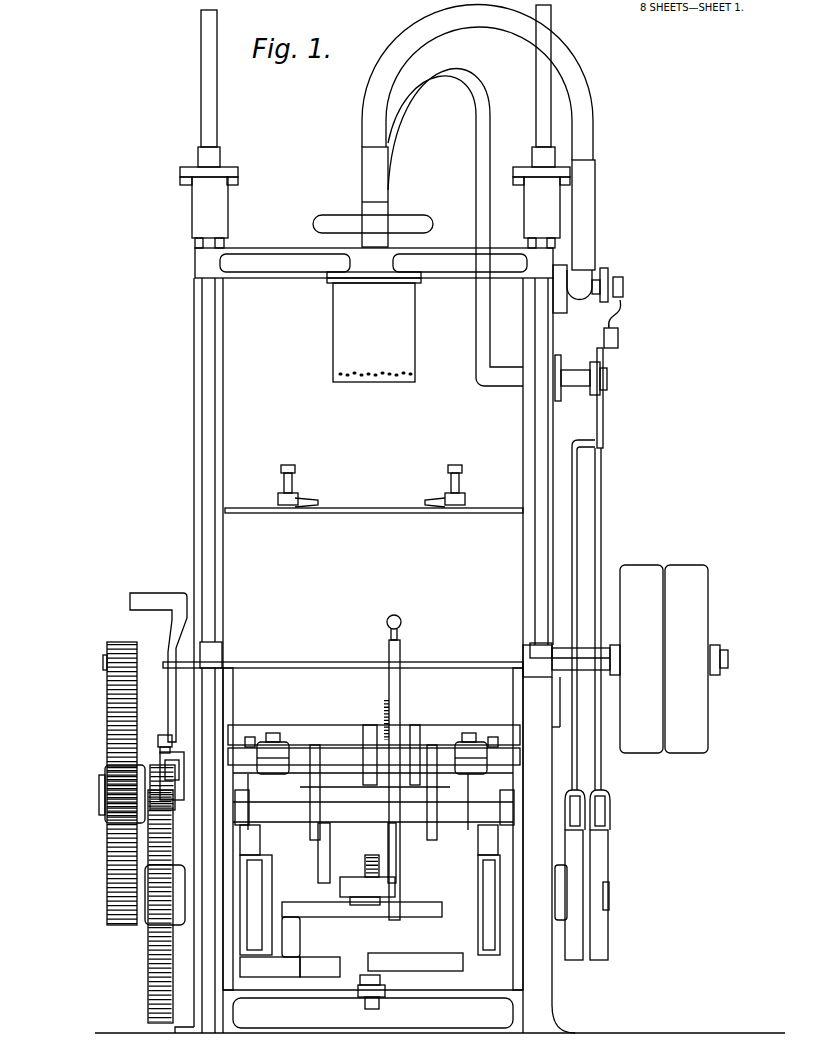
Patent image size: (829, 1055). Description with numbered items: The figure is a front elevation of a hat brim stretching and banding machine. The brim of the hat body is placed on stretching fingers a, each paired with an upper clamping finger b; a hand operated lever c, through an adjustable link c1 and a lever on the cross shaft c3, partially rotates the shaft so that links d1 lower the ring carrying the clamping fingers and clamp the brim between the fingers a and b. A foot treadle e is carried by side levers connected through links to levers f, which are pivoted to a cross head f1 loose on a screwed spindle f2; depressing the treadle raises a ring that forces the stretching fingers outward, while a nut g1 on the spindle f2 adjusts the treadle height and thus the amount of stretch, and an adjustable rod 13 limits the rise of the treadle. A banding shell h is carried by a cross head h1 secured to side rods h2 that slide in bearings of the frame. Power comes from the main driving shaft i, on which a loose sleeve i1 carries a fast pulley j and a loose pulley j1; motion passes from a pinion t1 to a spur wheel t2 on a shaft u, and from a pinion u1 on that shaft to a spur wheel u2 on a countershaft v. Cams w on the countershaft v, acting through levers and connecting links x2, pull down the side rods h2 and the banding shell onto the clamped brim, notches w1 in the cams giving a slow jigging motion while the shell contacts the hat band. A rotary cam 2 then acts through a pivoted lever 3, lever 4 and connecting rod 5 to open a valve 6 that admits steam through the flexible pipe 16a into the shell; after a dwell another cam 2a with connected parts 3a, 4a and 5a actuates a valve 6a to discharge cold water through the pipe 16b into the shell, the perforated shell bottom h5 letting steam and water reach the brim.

The pipe 16b is at (500, 26).
The flexible pipe 16a is at (475, 185).
The valve 6a is at (612, 282).
The lever 4a is at (618, 318).
The valve 6 is at (582, 383).
The lever 4 is at (604, 410).
The connecting rod 5a is at (603, 500).
The connecting rod 5 is at (573, 552).
The cross head h1 is at (452, 268).
The banding shell h is at (345, 330).
The side rods h2 is at (206, 363).
The cup bottom h5 is at (412, 374).
The upper clamping finger b is at (288, 468).
The stretching fingers a is at (306, 503).
The hand operated lever c is at (174, 628).
The adjustable link c1 is at (158, 740).
The cross shaft c3 is at (343, 765).
The pinion t1 is at (108, 655).
The spur wheel t2 is at (118, 752).
The shaft u is at (108, 795).
The pinion u1 is at (184, 798).
The spur wheel u2 is at (148, 948).
The countershaft v is at (190, 898).
The main driving shaft i is at (730, 658).
The loose sleeve i1 is at (615, 652).
The fast pulley j is at (642, 740).
The loose pulley j1 is at (692, 740).
The links d1 is at (270, 740).
The adjustable rod 13 is at (400, 712).
The connecting links x2 is at (238, 812).
The cams w is at (256, 945).
The notches w1 is at (262, 852).
The nut g1 is at (356, 875).
The levers f is at (292, 932).
The cross head f1 is at (350, 930).
The screwed spindle f2 is at (378, 845).
The foot treadle e is at (440, 955).
The pivoted lever 3 is at (566, 855).
The lever 3a is at (608, 840).
The rotary cam 2 is at (570, 872).
The cam 2a is at (600, 930).